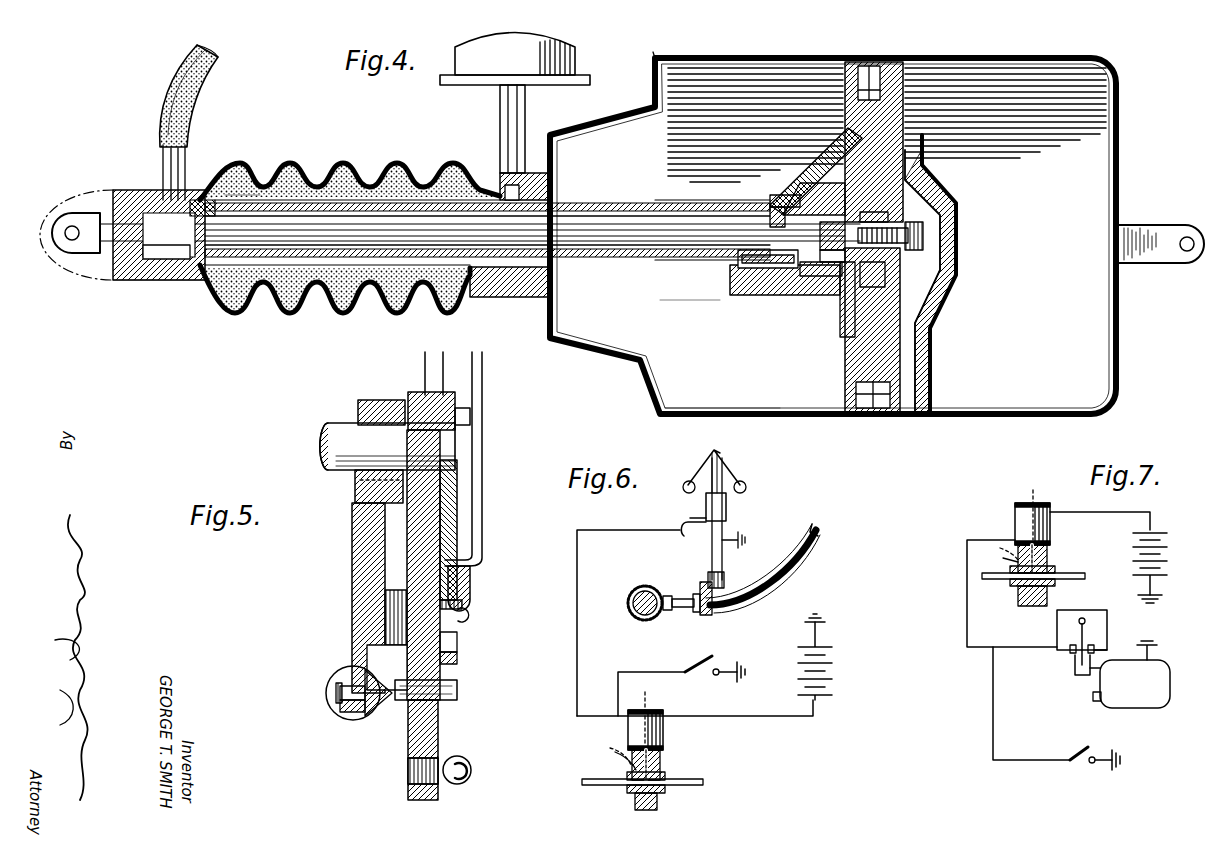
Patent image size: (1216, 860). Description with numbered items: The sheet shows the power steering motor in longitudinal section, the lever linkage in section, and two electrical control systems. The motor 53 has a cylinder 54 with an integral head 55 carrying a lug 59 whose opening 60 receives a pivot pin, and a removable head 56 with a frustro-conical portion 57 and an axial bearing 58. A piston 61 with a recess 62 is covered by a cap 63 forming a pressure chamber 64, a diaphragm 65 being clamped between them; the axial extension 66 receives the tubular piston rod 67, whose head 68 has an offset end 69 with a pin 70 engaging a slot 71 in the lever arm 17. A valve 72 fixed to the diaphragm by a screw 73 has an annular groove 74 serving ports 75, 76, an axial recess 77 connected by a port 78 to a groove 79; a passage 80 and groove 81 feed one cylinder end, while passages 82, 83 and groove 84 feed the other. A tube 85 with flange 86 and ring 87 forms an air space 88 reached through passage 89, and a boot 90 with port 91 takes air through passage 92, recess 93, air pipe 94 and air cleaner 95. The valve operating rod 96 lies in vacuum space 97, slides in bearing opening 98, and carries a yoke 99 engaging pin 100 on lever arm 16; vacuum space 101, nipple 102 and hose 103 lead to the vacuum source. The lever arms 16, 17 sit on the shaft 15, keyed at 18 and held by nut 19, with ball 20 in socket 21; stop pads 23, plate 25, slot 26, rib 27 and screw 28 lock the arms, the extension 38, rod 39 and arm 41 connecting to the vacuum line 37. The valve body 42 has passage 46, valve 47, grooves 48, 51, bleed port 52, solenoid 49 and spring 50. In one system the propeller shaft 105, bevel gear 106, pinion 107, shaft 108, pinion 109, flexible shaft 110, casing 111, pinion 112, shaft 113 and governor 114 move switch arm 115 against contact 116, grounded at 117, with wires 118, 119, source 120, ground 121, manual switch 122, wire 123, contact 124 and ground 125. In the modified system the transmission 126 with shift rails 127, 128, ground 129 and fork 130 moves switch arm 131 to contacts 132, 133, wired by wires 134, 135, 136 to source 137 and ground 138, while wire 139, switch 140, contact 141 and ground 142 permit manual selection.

In FIG. 5, the shaft 15 is at (330, 433).
In FIG. 5, the lever arm 16 is at (352, 563).
In FIG. 5, the lever arm 17 is at (415, 545).
In FIG. 5, the key 18 is at (350, 482).
In FIG. 5, the nut 19 is at (471, 420).
In FIG. 5, the ball 20 is at (460, 756).
In FIG. 5, the socket 21 is at (470, 776).
In FIG. 5, the stop pads 23 is at (397, 600).
In FIG. 5, the plate 25 is at (460, 664).
In FIG. 5, the slot 26 is at (462, 648).
In FIG. 5, the rib 27 is at (465, 604).
In FIG. 5, the screw 28 is at (466, 616).
In FIG. 6, the vacuum line 37 is at (600, 779).
In FIG. 7, the vacuum line 37 is at (993, 580).
In FIG. 5, the upward extension 38 is at (476, 568).
In FIG. 5, the rod 39 is at (483, 493).
In FIG. 5, the arm 41 is at (425, 378).
In FIG. 6, the valve body 42 is at (666, 778).
In FIG. 7, the valve body 42 is at (1050, 588).
In FIG. 6, the passage 46 is at (635, 795).
In FIG. 7, the passage 46 is at (1020, 600).
In FIG. 6, the valve 47 is at (661, 768).
In FIG. 7, the valve 47 is at (1046, 562).
In FIG. 6, the groove 48 is at (665, 790).
In FIG. 7, the groove 48 is at (1050, 578).
In FIG. 6, the solenoid 49 is at (664, 742).
In FIG. 7, the solenoid 49 is at (1015, 512).
In FIG. 6, the spring 50 is at (646, 710).
In FIG. 7, the spring 50 is at (1036, 507).
In FIG. 6, the groove 51 is at (602, 751).
In FIG. 7, the groove 51 is at (1000, 545).
In FIG. 6, the bleed port 52 is at (617, 753).
In FIG. 7, the bleed port 52 is at (998, 558).
In FIG. 4, the motor 53 is at (655, 58).
In FIG. 4, the cylinder 54 is at (742, 50).
In FIG. 4, the head 55 is at (1118, 106).
In FIG. 4, the head 56 is at (657, 396).
In FIG. 4, the frustro-conical portion 57 is at (576, 349).
In FIG. 4, the bearing 58 is at (516, 298).
In FIG. 4, the lug 59 is at (1140, 226).
In FIG. 4, the opening 60 is at (1183, 252).
In FIG. 4, the piston 61 is at (845, 398).
In FIG. 4, the recess 62 is at (930, 320).
In FIG. 4, the cap 63 is at (957, 206).
In FIG. 4, the pressure chamber 64 is at (940, 182).
In FIG. 4, the diaphragm 65 is at (938, 292).
In FIG. 4, the axial extension 66 is at (748, 197).
In FIG. 4, the piston rod 67 is at (676, 212).
In FIG. 4, the head 68 is at (128, 281).
In FIG. 5, the head 68 is at (335, 676).
In FIG. 4, the offset end 69 is at (99, 193).
In FIG. 5, the offset end 69 is at (376, 715).
In FIG. 5, the pin 70 is at (457, 690).
In FIG. 5, the slot 71 is at (432, 710).
In FIG. 4, the valve 72 is at (875, 209).
In FIG. 4, the screw 73 is at (925, 250).
In FIG. 4, the annular groove 74 is at (812, 204).
In FIG. 4, the port 75 is at (776, 207).
In FIG. 4, the port 76 is at (820, 296).
In FIG. 4, the axial recess 77 is at (856, 265).
In FIG. 4, the port 78 is at (837, 229).
In FIG. 4, the annular groove 79 is at (878, 279).
In FIG. 4, the passage 80 is at (832, 178).
In FIG. 4, the groove 81 is at (903, 140).
In FIG. 4, the passage 82 is at (841, 318).
In FIG. 4, the passage 83 is at (850, 346).
In FIG. 4, the groove 84 is at (927, 345).
In FIG. 4, the tube 85 is at (602, 210).
In FIG. 4, the annular flange 86 is at (212, 306).
In FIG. 4, the ring 87 is at (750, 293).
In FIG. 4, the air space 88 is at (636, 208).
In FIG. 4, the passage 89 is at (778, 296).
In FIG. 4, the boot 90 is at (406, 164).
In FIG. 4, the port 91 is at (242, 186).
In FIG. 4, the air passage 92 is at (482, 175).
In FIG. 4, the recess 93 is at (518, 186).
In FIG. 4, the air pipe 94 is at (524, 121).
In FIG. 4, the air cleaner 95 is at (576, 58).
In FIG. 4, the valve operating rod 96 is at (619, 247).
In FIG. 4, the vacuum space 97 is at (686, 266).
In FIG. 4, the bearing opening 98 is at (136, 191).
In FIG. 4, the yoke 99 is at (88, 255).
In FIG. 5, the yoke 99 is at (345, 708).
In FIG. 5, the pin 100 is at (340, 692).
In FIG. 4, the vacuum space 101 is at (165, 262).
In FIG. 4, the nipple 102 is at (186, 173).
In FIG. 4, the hose 103 is at (205, 92).
In FIG. 6, the propeller shaft 105 is at (641, 585).
In FIG. 6, the bevel gear 106 is at (655, 617).
In FIG. 6, the bevel pinion 107 is at (678, 598).
In FIG. 6, the shaft 108 is at (695, 596).
In FIG. 6, the bevel pinion 109 is at (713, 610).
In FIG. 6, the flexible shaft 110 is at (812, 530).
In FIG. 6, the casing 111 is at (770, 592).
In FIG. 6, the pinion 112 is at (724, 580).
In FIG. 6, the shaft 113 is at (724, 553).
In FIG. 6, the governor 114 is at (732, 465).
In FIG. 6, the switch arm 115 is at (698, 518).
In FIG. 6, the contact 116 is at (707, 525).
In FIG. 6, the ground 117 is at (741, 533).
In FIG. 6, the wire 118 is at (577, 612).
In FIG. 6, the wire 119 is at (772, 716).
In FIG. 6, the source of current 120 is at (832, 670).
In FIG. 6, the ground 121 is at (826, 621).
In FIG. 6, the manually operable switch 122 is at (700, 673).
In FIG. 6, the wire 123 is at (631, 672).
In FIG. 6, the contact 124 is at (722, 668).
In FIG. 6, the ground 125 is at (741, 678).
In FIG. 7, the transmission 126 is at (1160, 708).
In FIG. 7, the low and reverse gear shift rail 127 is at (1088, 678).
In FIG. 7, the second and high gear shift rail 128 is at (1094, 702).
In FIG. 7, the ground 129 is at (1150, 645).
In FIG. 7, the fork 130 is at (1074, 668).
In FIG. 7, the switch arm 131 is at (1062, 633).
In FIG. 7, the contact 132 is at (1070, 650).
In FIG. 7, the contact 133 is at (1095, 652).
In FIG. 7, the wire 134 is at (967, 608).
In FIG. 7, the wire 135 is at (1086, 615).
In FIG. 7, the wire 136 is at (1118, 515).
In FIG. 7, the source 137 is at (1152, 534).
In FIG. 7, the ground 138 is at (1155, 599).
In FIG. 7, the wire 139 is at (993, 733).
In FIG. 7, the manually operable switch 140 is at (1082, 765).
In FIG. 7, the contact 141 is at (1092, 766).
In FIG. 7, the ground 142 is at (1113, 770).